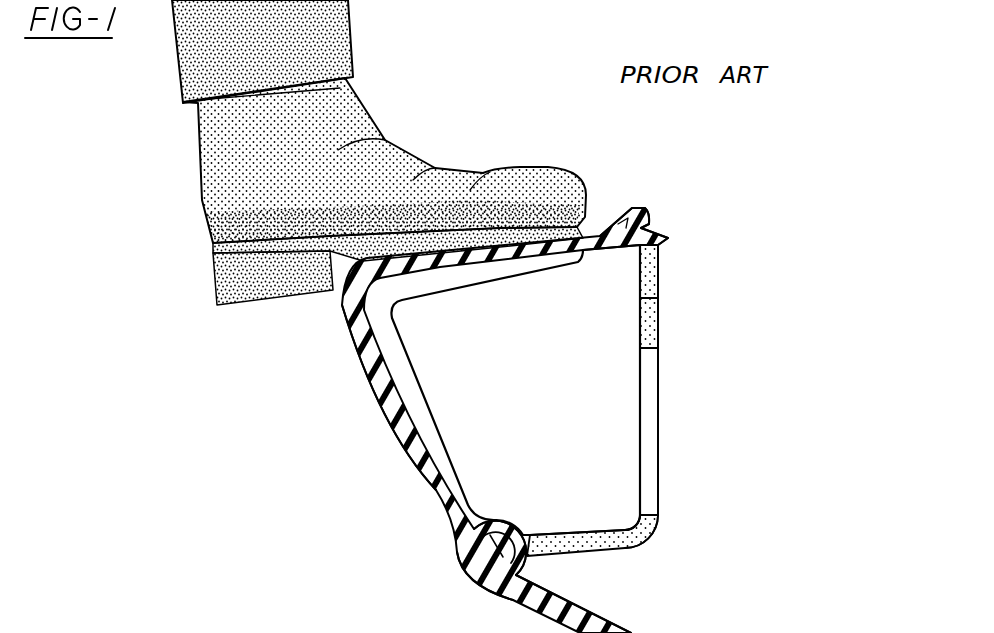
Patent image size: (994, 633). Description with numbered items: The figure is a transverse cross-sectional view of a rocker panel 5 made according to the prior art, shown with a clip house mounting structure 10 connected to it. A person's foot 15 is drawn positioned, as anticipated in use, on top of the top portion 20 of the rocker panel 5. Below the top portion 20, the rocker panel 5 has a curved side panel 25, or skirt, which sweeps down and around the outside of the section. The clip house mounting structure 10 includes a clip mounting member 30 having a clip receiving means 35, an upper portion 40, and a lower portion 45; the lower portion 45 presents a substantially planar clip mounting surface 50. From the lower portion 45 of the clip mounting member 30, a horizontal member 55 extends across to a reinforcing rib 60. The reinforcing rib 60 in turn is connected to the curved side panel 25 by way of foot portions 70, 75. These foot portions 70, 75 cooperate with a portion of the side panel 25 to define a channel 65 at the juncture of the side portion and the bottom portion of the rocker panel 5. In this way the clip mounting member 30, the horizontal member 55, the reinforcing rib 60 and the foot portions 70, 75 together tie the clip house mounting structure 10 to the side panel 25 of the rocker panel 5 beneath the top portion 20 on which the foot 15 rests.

The rocker panel 5 is at (506, 390).
The clip house mounting structure 10 is at (550, 390).
The foot 15 is at (384, 191).
The top portion 20 is at (631, 196).
The curved side panel 25 is at (374, 397).
The clip mounting member 30 is at (693, 431).
The clip receiving means 35 is at (691, 323).
The upper portion 40 is at (691, 271).
The lower portion 45 is at (693, 524).
The clip mounting surface 50 is at (705, 380).
The horizontal member 55 is at (595, 564).
The reinforcing rib 60 is at (525, 527).
The channel 65 is at (458, 582).
The foot portion 70 is at (507, 502).
The foot portion 75 is at (573, 599).